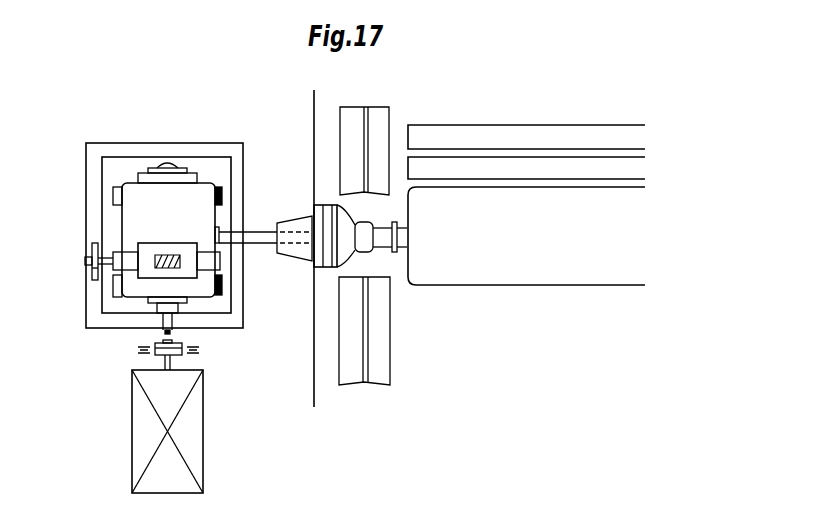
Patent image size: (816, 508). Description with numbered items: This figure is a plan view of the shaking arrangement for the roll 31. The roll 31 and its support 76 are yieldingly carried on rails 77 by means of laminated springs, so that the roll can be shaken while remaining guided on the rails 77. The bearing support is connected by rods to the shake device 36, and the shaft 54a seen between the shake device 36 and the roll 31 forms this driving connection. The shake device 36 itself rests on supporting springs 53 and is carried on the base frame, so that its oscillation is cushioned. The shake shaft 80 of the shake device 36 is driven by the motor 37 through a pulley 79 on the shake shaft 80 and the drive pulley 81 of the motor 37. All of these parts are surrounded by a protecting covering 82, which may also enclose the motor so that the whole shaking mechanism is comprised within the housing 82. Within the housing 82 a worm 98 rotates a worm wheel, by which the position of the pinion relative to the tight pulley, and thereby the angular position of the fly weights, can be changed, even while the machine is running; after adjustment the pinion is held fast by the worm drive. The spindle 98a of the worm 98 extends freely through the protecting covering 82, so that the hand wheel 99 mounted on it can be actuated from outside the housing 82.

The roll 31 is at (588, 268).
The shake device 36 is at (197, 200).
The motor 37 is at (190, 443).
The supporting springs 53 is at (219, 283).
The drive shaft 54a is at (268, 243).
The support 76 is at (367, 240).
The rails 77 is at (350, 127).
The pulley 79 is at (152, 352).
The shake shaft 80 is at (176, 331).
The drive pulley 81 is at (200, 352).
The protecting covering 82 is at (96, 165).
The worm 98 is at (165, 255).
The spindle 98a is at (92, 272).
The hand wheel 99 is at (91, 252).